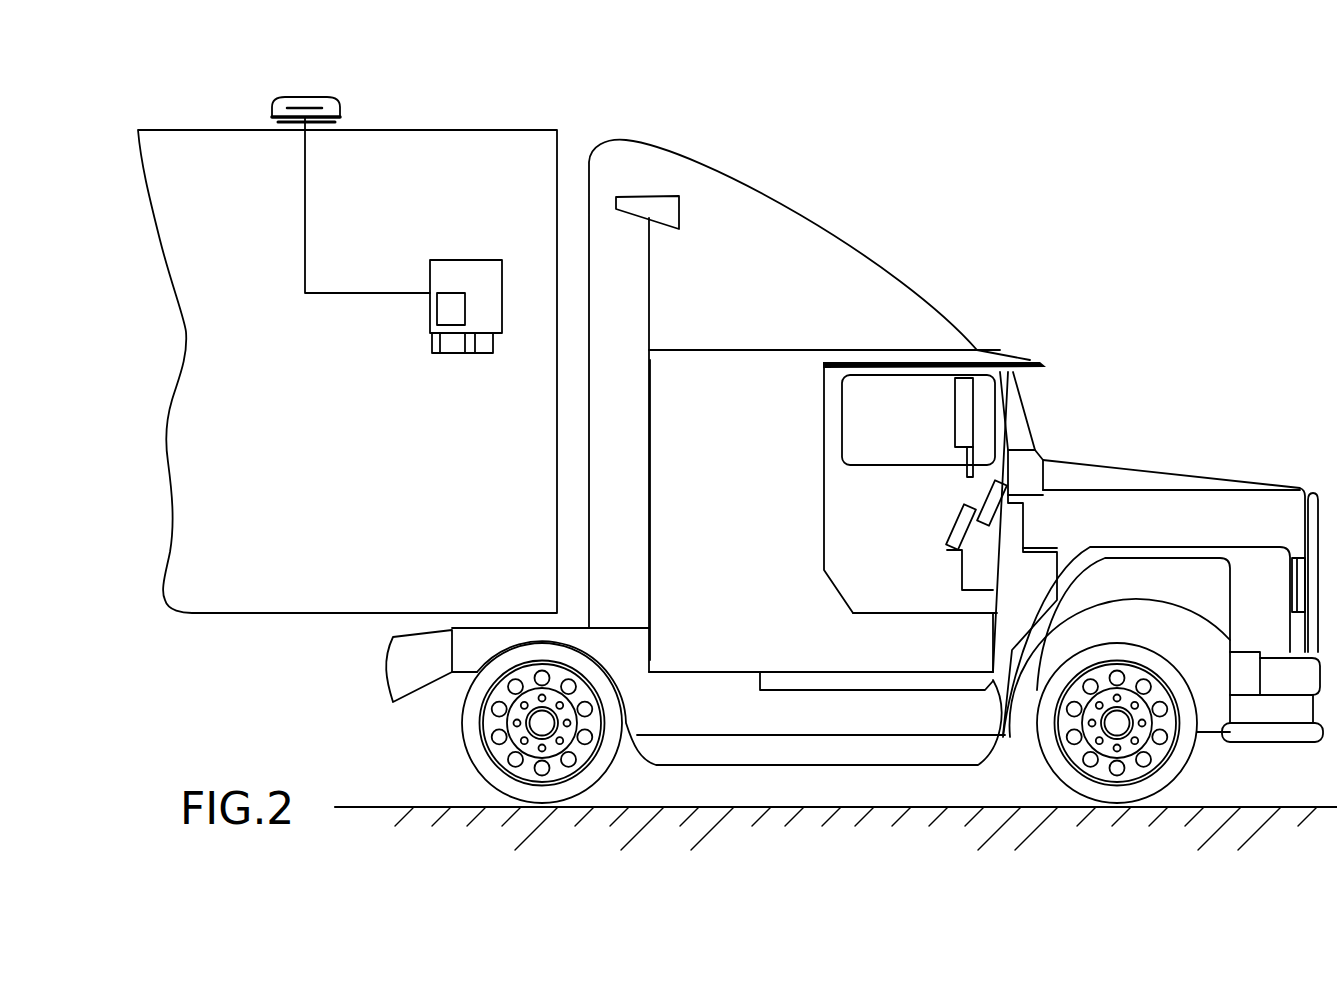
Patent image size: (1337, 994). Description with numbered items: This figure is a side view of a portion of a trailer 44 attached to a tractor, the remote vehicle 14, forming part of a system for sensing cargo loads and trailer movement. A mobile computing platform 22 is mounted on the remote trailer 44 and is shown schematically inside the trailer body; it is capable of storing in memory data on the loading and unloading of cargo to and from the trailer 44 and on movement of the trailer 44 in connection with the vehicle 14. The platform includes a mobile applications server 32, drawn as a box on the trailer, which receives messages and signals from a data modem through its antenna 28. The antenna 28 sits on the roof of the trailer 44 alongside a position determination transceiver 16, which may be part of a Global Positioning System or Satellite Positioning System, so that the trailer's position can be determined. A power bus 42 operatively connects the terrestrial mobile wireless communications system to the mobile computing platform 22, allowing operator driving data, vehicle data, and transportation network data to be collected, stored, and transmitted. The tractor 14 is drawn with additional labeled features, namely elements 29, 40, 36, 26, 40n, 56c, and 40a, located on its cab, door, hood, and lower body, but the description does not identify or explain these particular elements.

The remote vehicle 14 is at (830, 224).
The position determination transceiver 16 is at (318, 97).
The antenna 28 is at (300, 105).
The trailer 44 is at (445, 131).
The mobile computing platform 22 is at (410, 217).
The mobile applications server 32 is at (438, 260).
The side mirror 29 is at (630, 197).
The sensor 40 is at (652, 370).
The door sensors 36 is at (952, 522).
The hood sensor 26 is at (1015, 495).
The sensor 40n is at (1025, 547).
The door bottom edge 56c is at (875, 605).
The power bus 42 is at (835, 672).
The sensor 40a is at (988, 625).